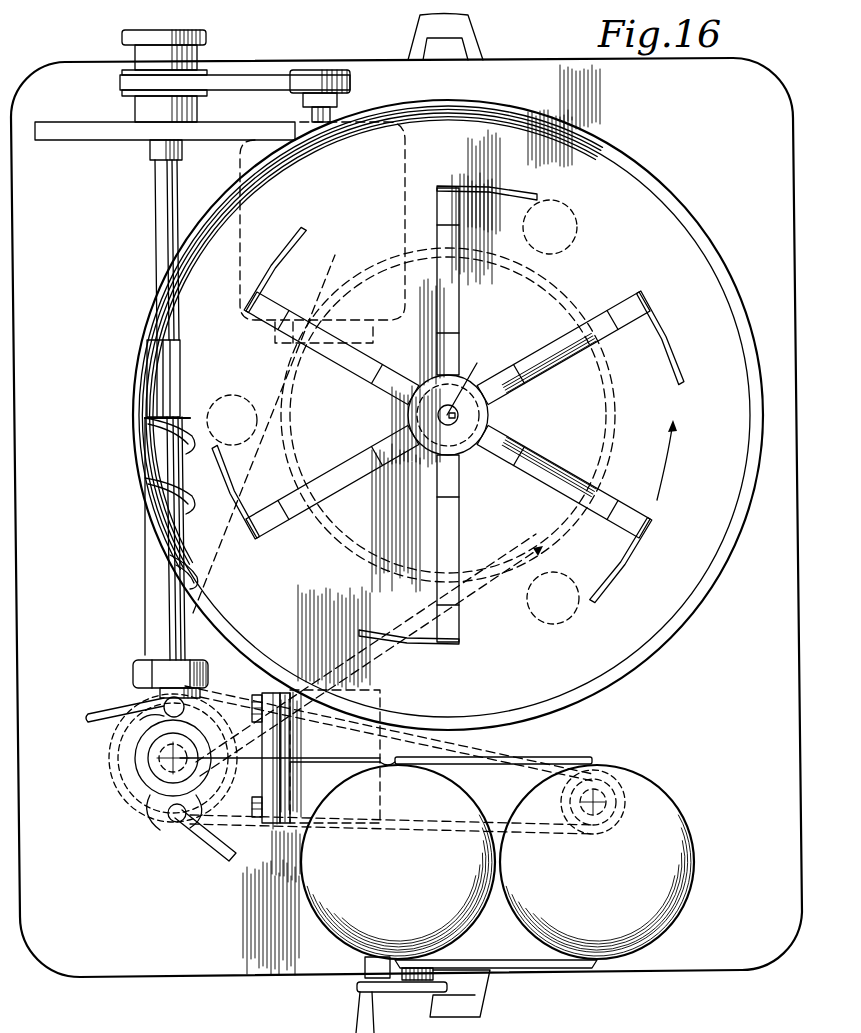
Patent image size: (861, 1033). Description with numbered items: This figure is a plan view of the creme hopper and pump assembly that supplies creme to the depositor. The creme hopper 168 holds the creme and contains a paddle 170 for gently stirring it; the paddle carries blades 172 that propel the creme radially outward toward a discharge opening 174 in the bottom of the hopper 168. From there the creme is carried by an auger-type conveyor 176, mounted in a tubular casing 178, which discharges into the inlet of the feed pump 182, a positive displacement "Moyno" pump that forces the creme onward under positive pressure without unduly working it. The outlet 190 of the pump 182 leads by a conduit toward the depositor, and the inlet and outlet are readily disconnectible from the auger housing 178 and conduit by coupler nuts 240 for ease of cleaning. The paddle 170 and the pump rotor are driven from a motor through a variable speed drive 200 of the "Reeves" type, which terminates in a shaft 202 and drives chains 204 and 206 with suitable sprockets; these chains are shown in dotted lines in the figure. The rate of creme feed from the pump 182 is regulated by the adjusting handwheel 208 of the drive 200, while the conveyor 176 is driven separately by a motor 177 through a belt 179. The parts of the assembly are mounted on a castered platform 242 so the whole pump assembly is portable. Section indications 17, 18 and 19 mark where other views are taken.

The section line 17- 17 is at (236, 536).
The section line 18- 18 is at (131, 884).
The section line 19- 19 is at (177, 630).
The creme hopper 168 is at (665, 634).
The paddle 170 is at (507, 437).
The blades 172 is at (420, 643).
The discharge opening 174 is at (197, 422).
The auger-type conveyor 176 is at (158, 457).
The motor 177 is at (249, 145).
The tubular casing 178 is at (150, 622).
The belt 179 is at (245, 83).
The feed pump 182 is at (128, 778).
The outlet 190 is at (193, 740).
The variable speed drive 200 is at (477, 870).
The shaft 202 is at (567, 808).
The chain 204 is at (493, 748).
The chain 206 is at (377, 667).
The adjusting handwheel 208 is at (380, 992).
The coupler nuts 240 is at (133, 673).
The platform 242 is at (533, 70).